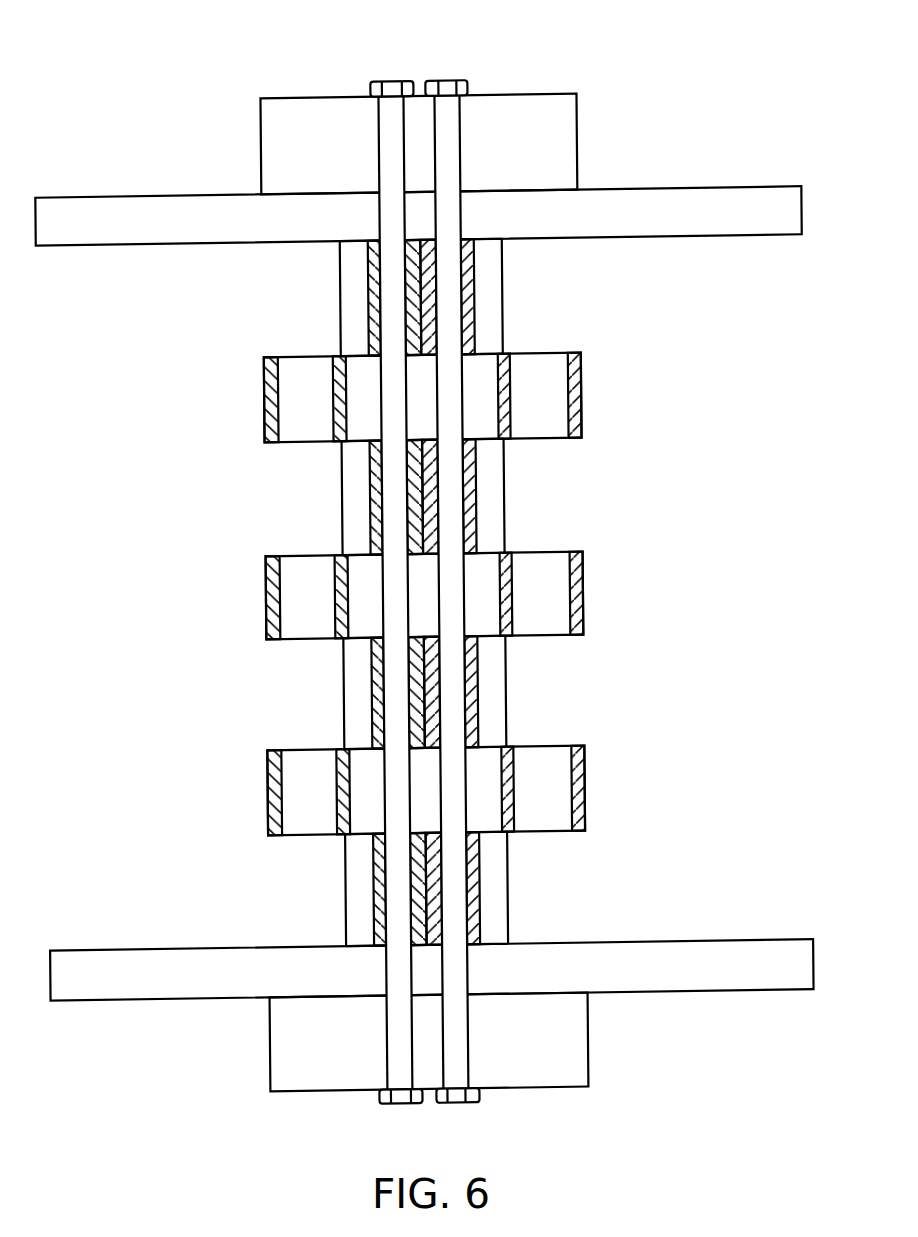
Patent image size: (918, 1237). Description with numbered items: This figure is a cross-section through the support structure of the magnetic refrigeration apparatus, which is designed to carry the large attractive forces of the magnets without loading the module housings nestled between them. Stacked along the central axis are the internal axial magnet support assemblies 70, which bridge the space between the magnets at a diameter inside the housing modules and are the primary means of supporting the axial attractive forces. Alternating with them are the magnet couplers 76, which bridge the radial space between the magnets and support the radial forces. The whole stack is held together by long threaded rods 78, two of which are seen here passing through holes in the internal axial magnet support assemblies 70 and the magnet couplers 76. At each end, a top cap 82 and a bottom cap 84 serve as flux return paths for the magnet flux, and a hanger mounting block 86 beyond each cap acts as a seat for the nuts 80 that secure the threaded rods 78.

The internal axial magnet support assembly 70 is at (583, 412).
The magnet coupler 76 is at (505, 314).
The threaded rod 78 is at (382, 134).
The nut 80 is at (455, 80).
The top cap 82 is at (806, 221).
The bottom cap 84 is at (810, 976).
The hanger mounting block 86 is at (265, 146).